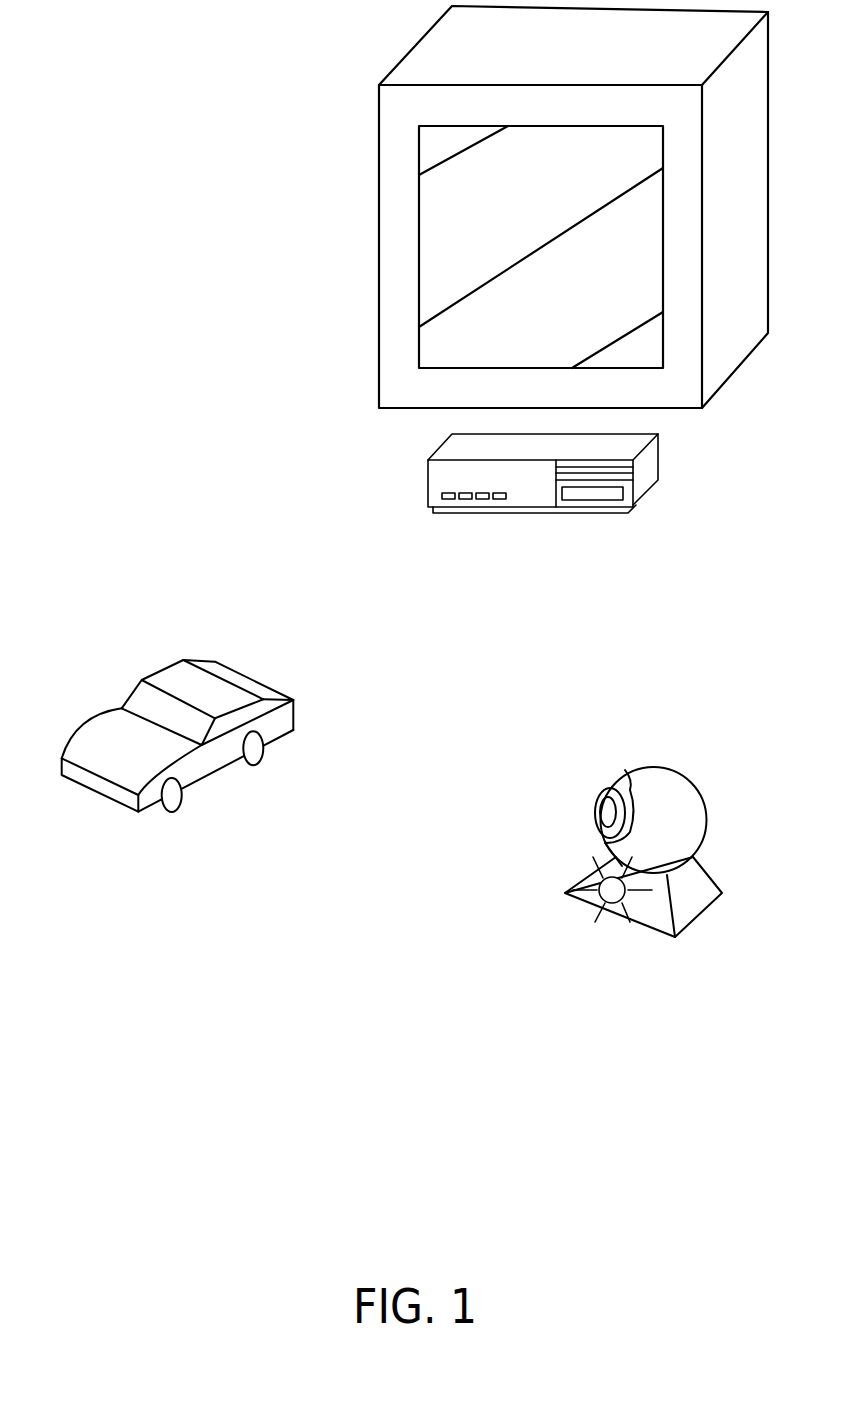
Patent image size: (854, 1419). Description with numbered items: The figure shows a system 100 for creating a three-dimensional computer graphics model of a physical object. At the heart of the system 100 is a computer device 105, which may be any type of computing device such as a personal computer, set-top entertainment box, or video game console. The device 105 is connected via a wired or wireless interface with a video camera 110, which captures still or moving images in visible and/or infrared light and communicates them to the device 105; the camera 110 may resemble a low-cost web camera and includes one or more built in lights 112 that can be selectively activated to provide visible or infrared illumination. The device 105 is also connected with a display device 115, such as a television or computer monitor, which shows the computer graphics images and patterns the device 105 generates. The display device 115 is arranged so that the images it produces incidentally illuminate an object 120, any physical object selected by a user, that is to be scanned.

The system 100 is at (92, 75).
The computer device 105 is at (620, 520).
The video camera 110 is at (643, 768).
The built in lights 112 is at (610, 900).
The display device 115 is at (387, 333).
The object 120 is at (190, 788).